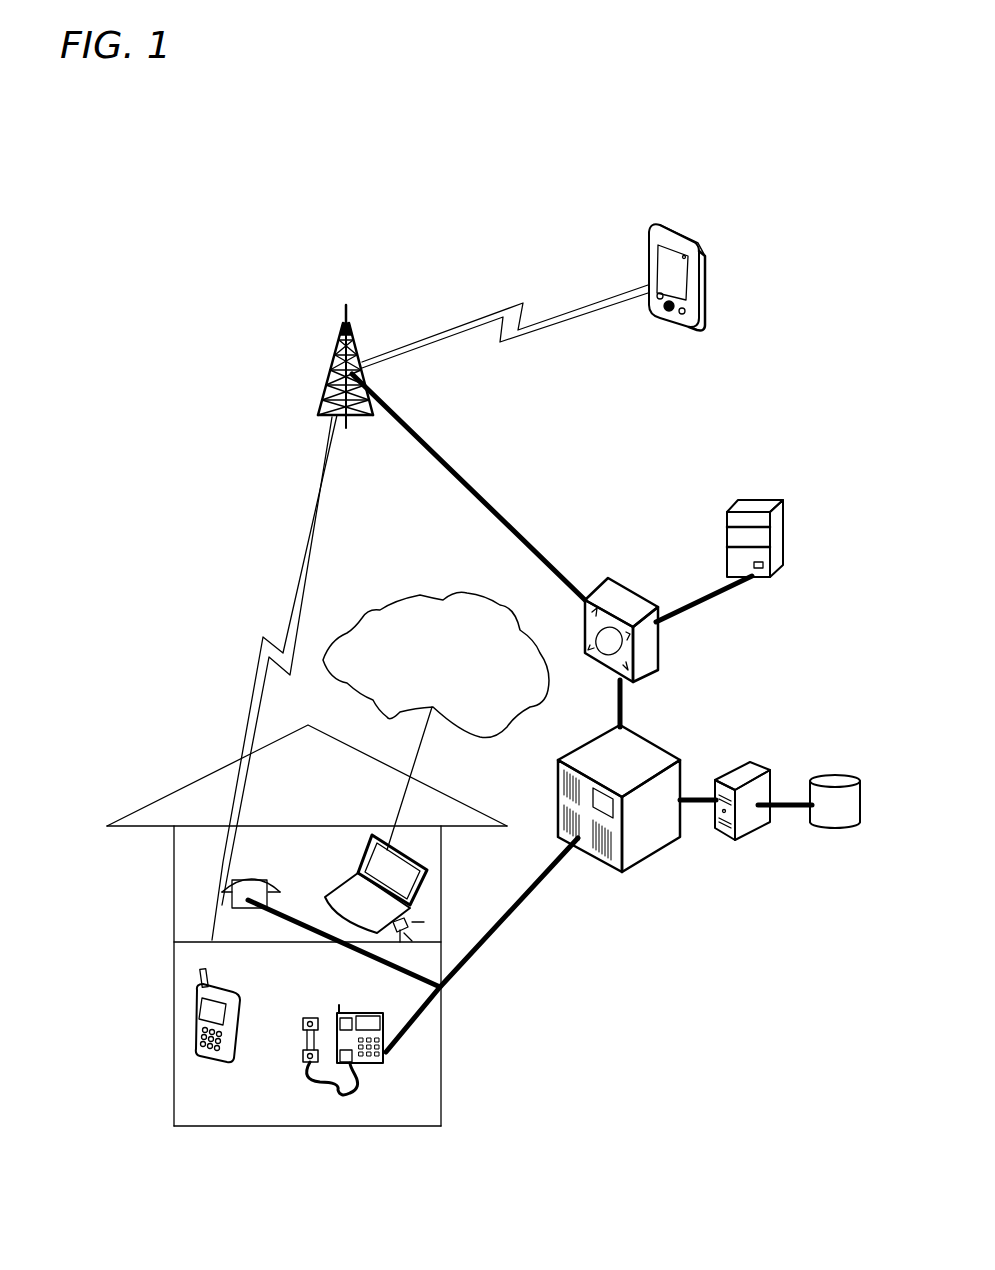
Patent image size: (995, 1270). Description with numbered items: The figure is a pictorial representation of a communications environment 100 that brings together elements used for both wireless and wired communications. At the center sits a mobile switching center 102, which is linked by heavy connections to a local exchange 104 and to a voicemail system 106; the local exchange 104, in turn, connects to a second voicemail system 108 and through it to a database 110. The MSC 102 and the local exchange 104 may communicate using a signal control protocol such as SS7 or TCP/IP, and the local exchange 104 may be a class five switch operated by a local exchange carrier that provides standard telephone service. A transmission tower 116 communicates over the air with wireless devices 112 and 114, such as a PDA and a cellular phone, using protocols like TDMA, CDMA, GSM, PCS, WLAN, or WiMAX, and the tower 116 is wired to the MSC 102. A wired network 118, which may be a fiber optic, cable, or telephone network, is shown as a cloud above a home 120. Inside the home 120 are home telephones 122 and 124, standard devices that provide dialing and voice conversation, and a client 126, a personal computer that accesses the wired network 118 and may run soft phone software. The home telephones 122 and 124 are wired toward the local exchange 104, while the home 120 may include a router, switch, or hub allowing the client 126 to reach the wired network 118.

The communications environment 100 is at (173, 232).
The mobile switching center 102 is at (608, 578).
The local exchange 104 is at (626, 874).
The voicemail system 106 is at (760, 527).
The voicemail system 108 is at (758, 828).
The database 110 is at (832, 780).
The wireless device 112 is at (700, 242).
The wireless device 114 is at (198, 1048).
The transmission tower 116 is at (325, 406).
The wired network 118 is at (418, 689).
The home 120 is at (170, 782).
The home telephone 122 is at (248, 900).
The home telephone 124 is at (385, 1058).
The client 126 is at (428, 900).